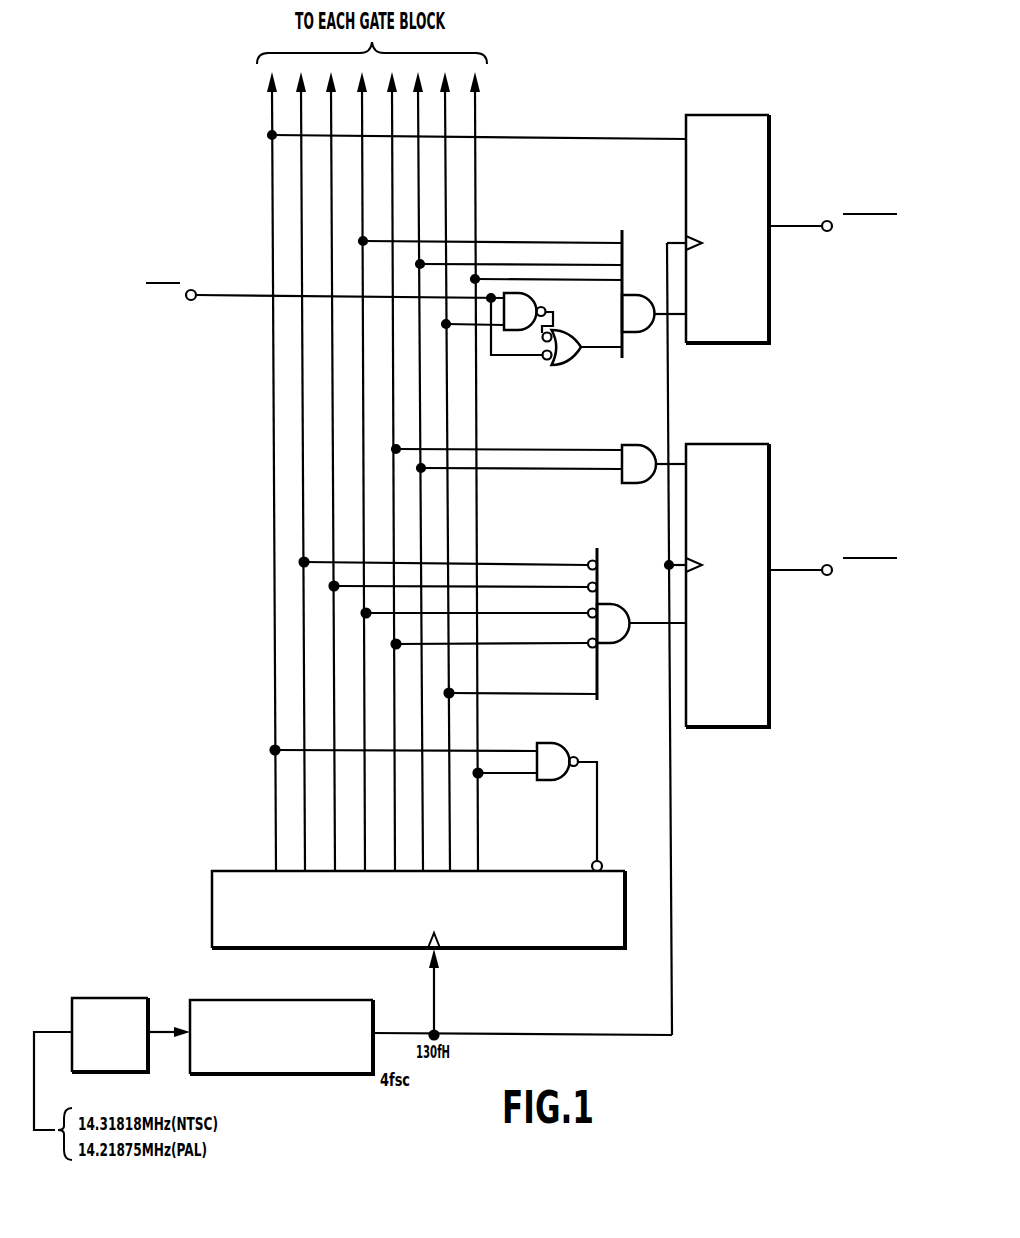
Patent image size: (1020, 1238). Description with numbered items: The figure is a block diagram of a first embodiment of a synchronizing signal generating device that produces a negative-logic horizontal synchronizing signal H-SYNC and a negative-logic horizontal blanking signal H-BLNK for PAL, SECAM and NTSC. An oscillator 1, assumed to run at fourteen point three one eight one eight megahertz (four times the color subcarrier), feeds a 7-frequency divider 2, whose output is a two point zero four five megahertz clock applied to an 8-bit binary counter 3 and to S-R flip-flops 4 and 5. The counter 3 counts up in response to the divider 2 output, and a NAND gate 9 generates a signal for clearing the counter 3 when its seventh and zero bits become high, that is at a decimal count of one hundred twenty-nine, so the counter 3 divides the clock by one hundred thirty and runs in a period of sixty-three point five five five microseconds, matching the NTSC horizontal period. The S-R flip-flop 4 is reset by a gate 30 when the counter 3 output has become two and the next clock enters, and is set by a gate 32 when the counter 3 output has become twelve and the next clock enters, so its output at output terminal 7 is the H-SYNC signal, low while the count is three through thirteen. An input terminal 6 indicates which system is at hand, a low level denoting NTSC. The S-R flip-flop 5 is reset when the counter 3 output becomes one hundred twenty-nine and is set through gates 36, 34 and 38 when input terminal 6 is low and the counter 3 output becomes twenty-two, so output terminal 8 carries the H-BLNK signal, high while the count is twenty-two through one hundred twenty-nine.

The oscillator 1 is at (107, 998).
The 7-frequency divider 2 is at (255, 1000).
The 8-bit binary counter 3 is at (578, 948).
The S-R flip-flop 4 is at (741, 727).
The S-R flip-flop 5 is at (731, 343).
The input terminal 6 is at (193, 290).
The output terminal 7 is at (826, 565).
The output terminal 8 is at (826, 221).
The NAND gate 9 is at (548, 781).
The gate 30 is at (620, 644).
The gate 32 is at (637, 484).
The gate 34 is at (574, 366).
The gate 36 is at (549, 320).
The gate 38 is at (641, 293).